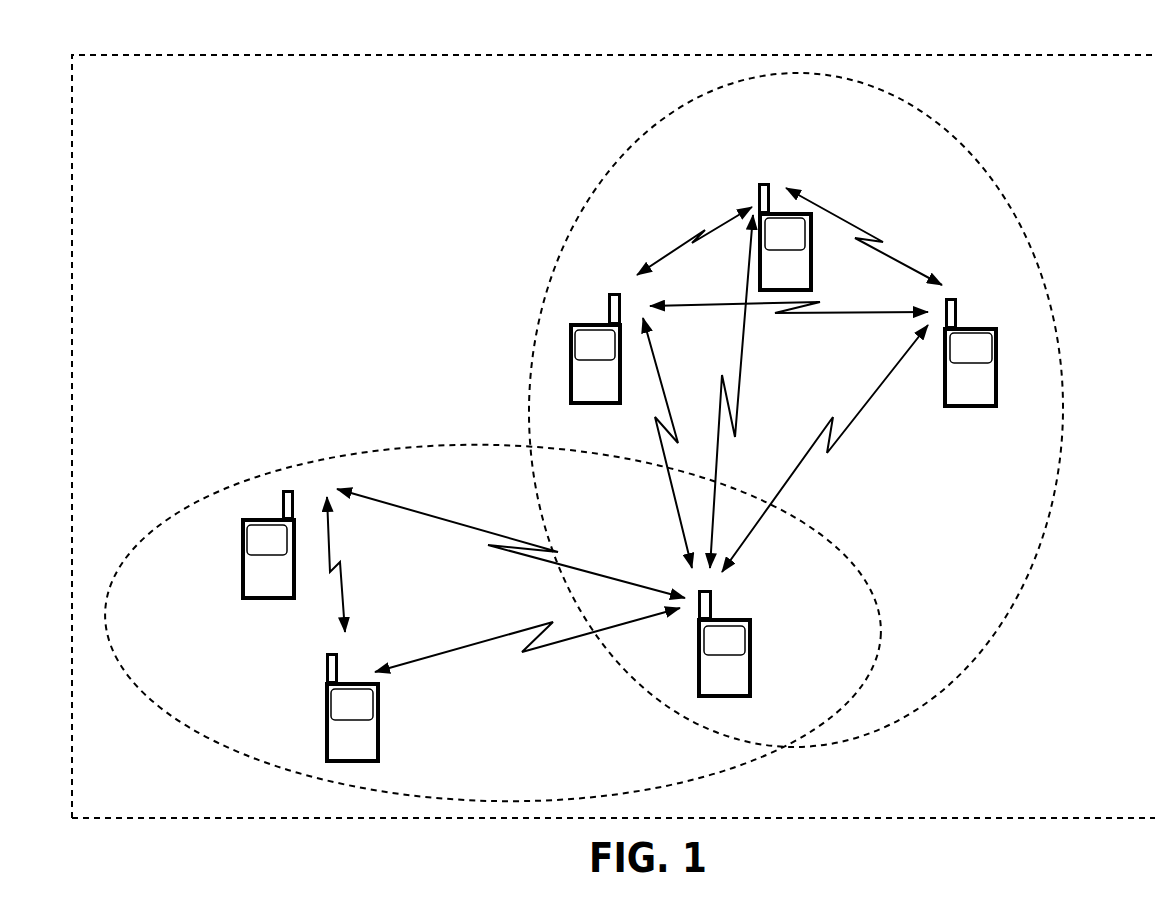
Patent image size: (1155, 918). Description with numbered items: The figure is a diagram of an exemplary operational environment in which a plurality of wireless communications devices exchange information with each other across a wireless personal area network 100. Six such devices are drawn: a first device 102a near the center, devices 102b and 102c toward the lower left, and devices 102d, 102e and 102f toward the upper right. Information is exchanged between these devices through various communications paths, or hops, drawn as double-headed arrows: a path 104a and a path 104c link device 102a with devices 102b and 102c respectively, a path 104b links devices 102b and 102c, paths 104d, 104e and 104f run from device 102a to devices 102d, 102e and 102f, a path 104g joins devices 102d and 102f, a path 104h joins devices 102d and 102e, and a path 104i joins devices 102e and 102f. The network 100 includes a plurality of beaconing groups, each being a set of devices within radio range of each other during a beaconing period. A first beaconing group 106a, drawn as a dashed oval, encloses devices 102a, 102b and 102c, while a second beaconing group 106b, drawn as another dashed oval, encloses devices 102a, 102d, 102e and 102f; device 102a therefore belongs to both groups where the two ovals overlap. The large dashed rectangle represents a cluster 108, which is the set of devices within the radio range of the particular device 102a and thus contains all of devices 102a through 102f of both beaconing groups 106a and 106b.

The wireless personal area network 100 is at (1118, 23).
The wireless communications device 102a is at (752, 647).
The wireless communications device 102b is at (296, 506).
The wireless communications device 102c is at (380, 716).
The wireless communications device 102d is at (622, 315).
The wireless communications device 102e is at (770, 187).
The wireless communications device 102f is at (957, 320).
The communications path 104a is at (394, 506).
The communications path 104b is at (342, 568).
The communications path 104c is at (447, 650).
The communications path 104d is at (657, 362).
The communications path 104e is at (740, 388).
The communications path 104f is at (842, 441).
The communications path 104g is at (812, 313).
The communications path 104h is at (692, 239).
The communications path 104i is at (872, 236).
The beaconing group 106a is at (393, 447).
The beaconing group 106b is at (1036, 218).
The cluster 108 is at (663, 55).